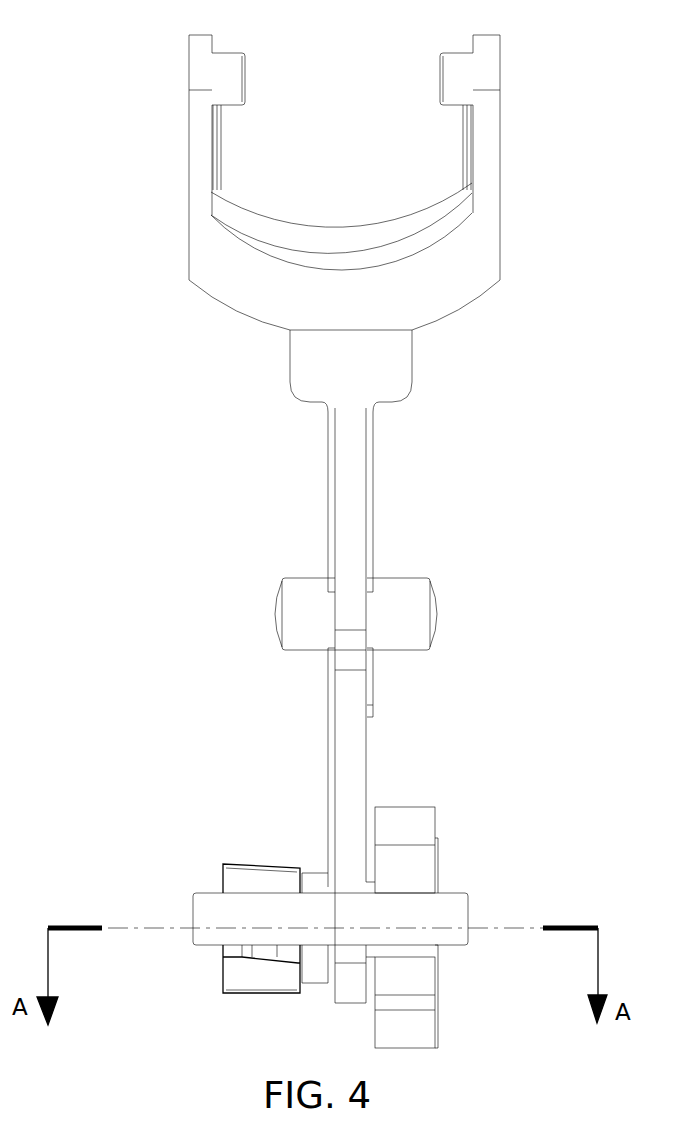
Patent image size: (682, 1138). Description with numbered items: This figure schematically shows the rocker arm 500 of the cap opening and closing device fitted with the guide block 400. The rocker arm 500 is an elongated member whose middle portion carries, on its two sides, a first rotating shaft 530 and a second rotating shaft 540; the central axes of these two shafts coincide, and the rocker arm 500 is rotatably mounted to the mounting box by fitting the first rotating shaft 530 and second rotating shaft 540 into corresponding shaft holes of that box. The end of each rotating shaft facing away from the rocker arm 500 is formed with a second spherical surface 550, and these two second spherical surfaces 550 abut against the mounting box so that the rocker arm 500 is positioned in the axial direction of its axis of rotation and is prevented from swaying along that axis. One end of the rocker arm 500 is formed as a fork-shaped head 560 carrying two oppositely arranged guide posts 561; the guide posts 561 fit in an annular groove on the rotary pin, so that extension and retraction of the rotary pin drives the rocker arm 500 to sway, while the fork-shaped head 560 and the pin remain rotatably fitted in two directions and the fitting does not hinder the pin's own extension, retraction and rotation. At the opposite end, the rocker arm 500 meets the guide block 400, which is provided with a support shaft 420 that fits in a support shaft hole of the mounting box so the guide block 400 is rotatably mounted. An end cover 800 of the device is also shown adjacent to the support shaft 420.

The guide block 400 is at (405, 823).
The support shaft 420 is at (457, 900).
The rocker arm 500 is at (350, 487).
The first rotating shaft 530 is at (307, 593).
The second rotating shaft 540 is at (402, 590).
The second spherical surface 550 is at (277, 612).
The fork-shaped head 560 is at (485, 205).
The guide post 561 is at (228, 62).
The end cover 800 is at (223, 872).